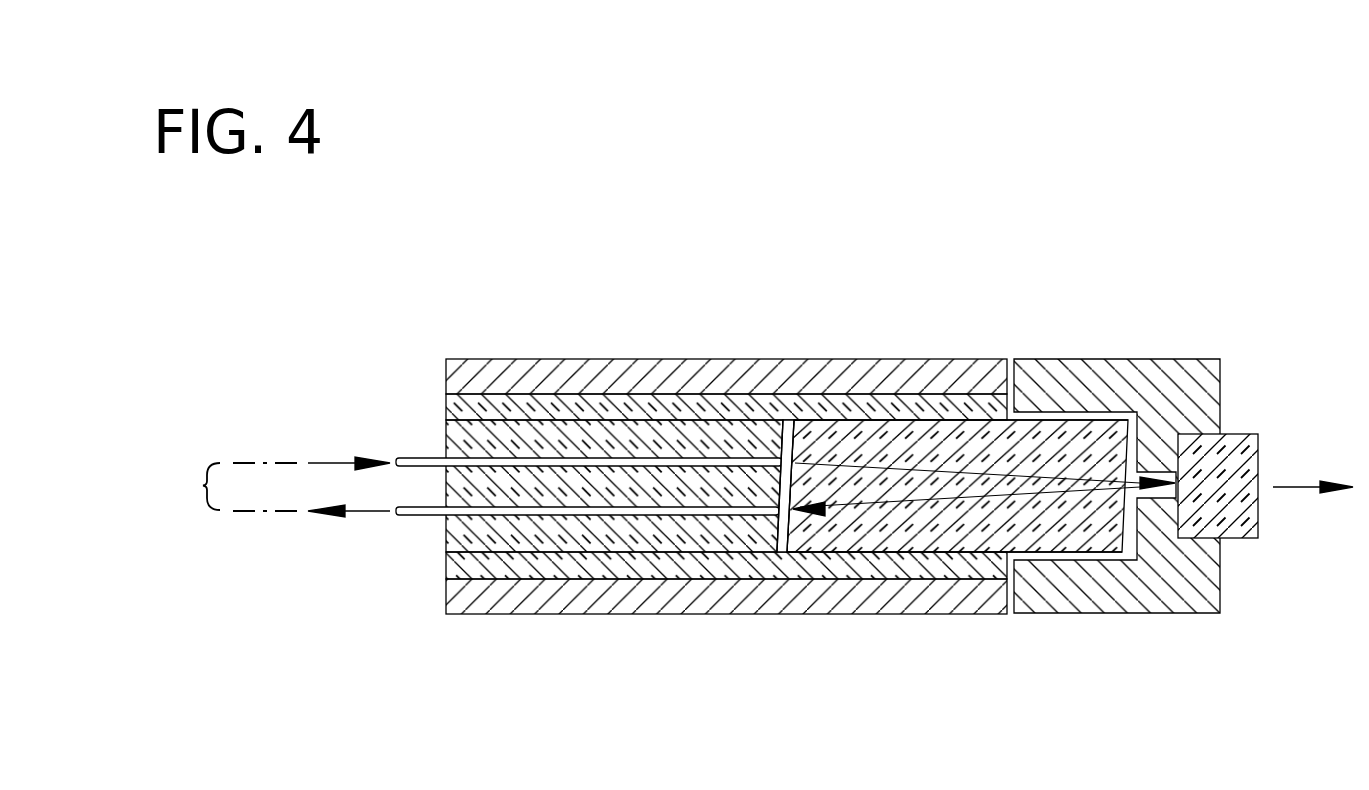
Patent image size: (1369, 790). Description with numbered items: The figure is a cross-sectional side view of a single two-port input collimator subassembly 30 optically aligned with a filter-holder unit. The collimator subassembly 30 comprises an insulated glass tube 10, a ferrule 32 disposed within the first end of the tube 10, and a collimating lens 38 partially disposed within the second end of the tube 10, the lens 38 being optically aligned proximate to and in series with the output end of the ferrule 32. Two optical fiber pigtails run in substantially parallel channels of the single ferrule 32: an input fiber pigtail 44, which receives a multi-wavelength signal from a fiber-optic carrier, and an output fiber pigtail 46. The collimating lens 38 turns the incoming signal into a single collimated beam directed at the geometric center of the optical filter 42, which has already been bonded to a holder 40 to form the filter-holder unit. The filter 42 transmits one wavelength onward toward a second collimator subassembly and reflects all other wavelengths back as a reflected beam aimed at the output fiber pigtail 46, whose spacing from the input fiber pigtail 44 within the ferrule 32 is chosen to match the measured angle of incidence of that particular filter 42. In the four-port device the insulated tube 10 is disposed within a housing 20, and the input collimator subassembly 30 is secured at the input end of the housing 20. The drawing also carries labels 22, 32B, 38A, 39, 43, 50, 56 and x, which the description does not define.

The insulated glass tube 10 is at (597, 568).
The housing 20 is at (717, 598).
The thin film filter 22 is at (781, 516).
The input collimator subassembly 30 is at (713, 514).
The ferrule 32 is at (448, 532).
The end face of first glass block 32B is at (785, 448).
The collimating lens 38 is at (912, 430).
The end face of second glass block 38A is at (785, 448).
The upper surface of second glass block 39 is at (965, 440).
The holder 40 is at (1090, 604).
The optical filter 42 is at (1252, 452).
The lower surface of second glass block 43 is at (965, 440).
The input fiber pigtail 44 is at (401, 457).
The output fiber pigtail 46 is at (405, 513).
The optical device 50 is at (216, 684).
The collimator assembly 56 is at (1180, 479).
The fiber spacing x is at (203, 486).